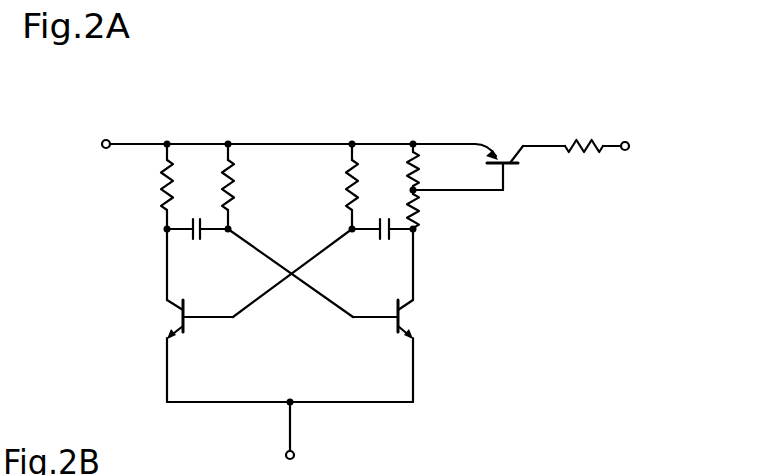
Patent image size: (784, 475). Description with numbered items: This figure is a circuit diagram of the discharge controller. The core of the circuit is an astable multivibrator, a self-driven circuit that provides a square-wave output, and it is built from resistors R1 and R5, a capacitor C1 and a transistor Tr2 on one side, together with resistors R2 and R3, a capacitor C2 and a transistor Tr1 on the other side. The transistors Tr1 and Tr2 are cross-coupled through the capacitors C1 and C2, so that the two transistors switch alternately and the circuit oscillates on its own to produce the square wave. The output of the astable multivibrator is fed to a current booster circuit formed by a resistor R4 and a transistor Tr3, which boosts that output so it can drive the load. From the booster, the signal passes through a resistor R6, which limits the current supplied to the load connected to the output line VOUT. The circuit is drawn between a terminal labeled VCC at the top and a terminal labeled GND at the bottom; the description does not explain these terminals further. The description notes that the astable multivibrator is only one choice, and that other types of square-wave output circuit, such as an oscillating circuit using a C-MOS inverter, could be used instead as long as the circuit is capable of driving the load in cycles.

The resistor R1 is at (245, 186).
The resistor R2 is at (330, 186).
The resistor R3 is at (143, 186).
The resistor R4 is at (431, 167).
The resistor R5 is at (431, 214).
The resistor R6 is at (572, 125).
The capacitor C1 is at (197, 249).
The capacitor C2 is at (382, 249).
The transistor Tr1 is at (200, 315).
The transistor Tr2 is at (382, 315).
The transistor Tr3 is at (468, 146).
The supply voltage terminal Vcc VCC is at (67, 130).
The output line VOUT is at (659, 149).
The ground terminal GND is at (289, 438).